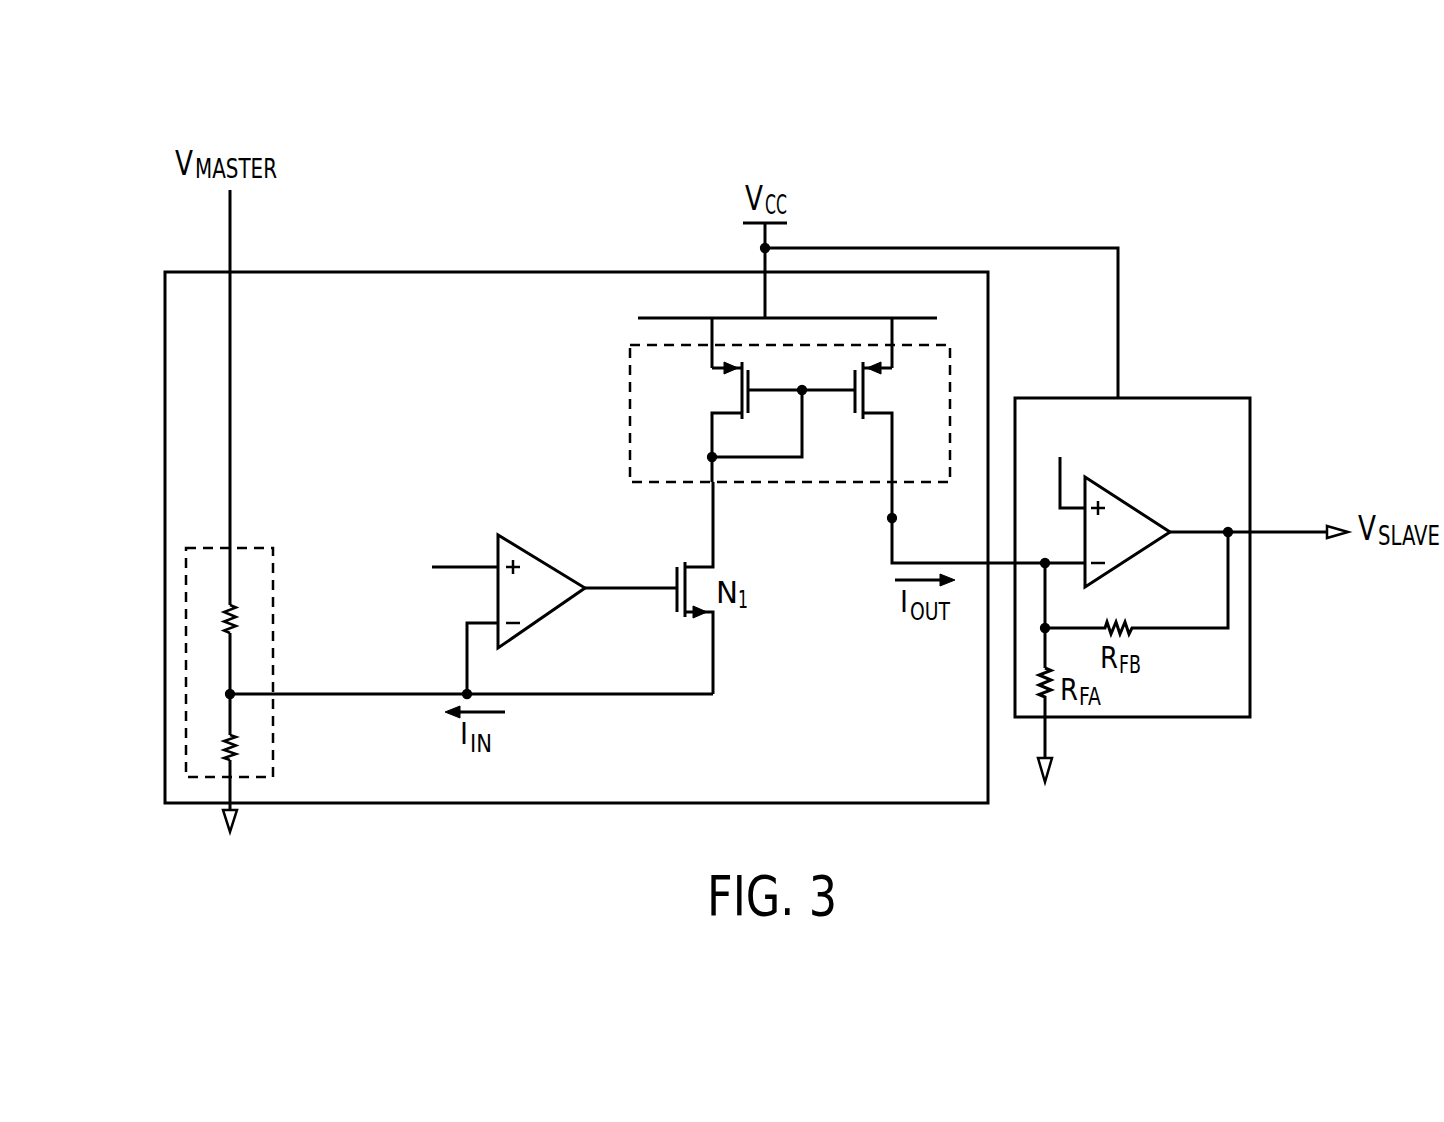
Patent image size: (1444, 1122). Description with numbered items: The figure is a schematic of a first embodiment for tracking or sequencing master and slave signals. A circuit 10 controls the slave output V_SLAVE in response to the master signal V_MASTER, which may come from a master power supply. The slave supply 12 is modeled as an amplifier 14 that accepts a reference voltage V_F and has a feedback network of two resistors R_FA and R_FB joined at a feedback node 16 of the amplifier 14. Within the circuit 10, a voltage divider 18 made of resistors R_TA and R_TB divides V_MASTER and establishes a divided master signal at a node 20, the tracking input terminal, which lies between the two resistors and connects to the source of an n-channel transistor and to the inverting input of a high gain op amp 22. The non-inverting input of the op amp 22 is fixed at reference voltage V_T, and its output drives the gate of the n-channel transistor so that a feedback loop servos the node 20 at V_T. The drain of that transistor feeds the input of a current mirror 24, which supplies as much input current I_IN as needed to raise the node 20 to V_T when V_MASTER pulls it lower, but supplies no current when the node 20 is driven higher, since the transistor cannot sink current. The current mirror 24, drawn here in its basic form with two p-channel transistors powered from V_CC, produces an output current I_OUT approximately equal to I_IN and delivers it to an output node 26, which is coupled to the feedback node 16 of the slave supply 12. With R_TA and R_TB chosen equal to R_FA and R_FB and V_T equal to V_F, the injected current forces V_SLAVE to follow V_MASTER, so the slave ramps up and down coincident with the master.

The circuit 10 is at (165, 363).
The slave supply 12 is at (1187, 398).
The amplifier 14 is at (1130, 505).
The feedback node 16 is at (1045, 563).
The voltage divider 18 is at (187, 587).
The node 20 is at (230, 694).
The op amp 22 is at (542, 562).
The current mirror 24 is at (630, 382).
The output node 26 is at (892, 518).